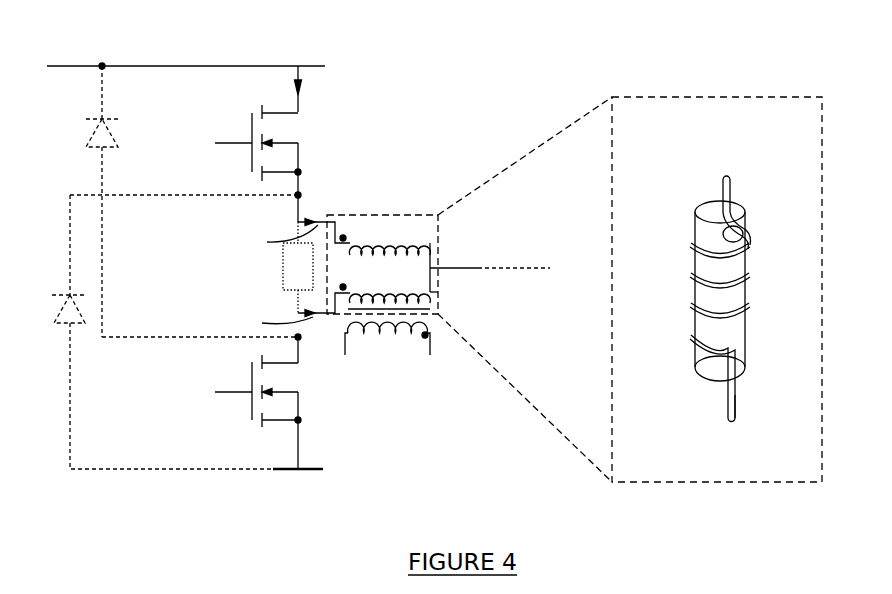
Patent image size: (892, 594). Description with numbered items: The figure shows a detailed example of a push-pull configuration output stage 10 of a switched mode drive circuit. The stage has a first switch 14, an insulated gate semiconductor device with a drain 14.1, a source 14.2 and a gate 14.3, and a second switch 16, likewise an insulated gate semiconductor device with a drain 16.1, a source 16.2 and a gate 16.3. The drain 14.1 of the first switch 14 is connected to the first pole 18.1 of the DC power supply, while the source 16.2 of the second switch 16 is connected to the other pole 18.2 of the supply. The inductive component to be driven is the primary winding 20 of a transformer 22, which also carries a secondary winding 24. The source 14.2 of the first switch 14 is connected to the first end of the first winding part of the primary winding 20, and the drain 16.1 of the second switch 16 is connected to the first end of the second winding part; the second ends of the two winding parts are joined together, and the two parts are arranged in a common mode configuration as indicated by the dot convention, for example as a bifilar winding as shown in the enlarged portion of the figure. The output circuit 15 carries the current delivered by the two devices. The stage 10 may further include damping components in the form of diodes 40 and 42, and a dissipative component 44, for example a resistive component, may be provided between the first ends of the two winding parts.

The output stage 10 is at (365, 107).
The first switch 14 is at (217, 162).
The drain of first switch 14.1 is at (278, 112).
The source of first switch 14.2 is at (281, 169).
The gate of first switch 14.3 is at (233, 137).
The output circuit 15 is at (297, 217).
The second switch 16 is at (232, 373).
The drain of second switch 16.1 is at (281, 363).
The source of second switch 16.2 is at (282, 423).
The gate of second switch 16.3 is at (237, 393).
The first pole of DC power supply 18.1 is at (302, 63).
The other pole of DC power supply 18.2 is at (298, 472).
The primary winding 20 is at (485, 248).
The transformer 22 is at (468, 305).
The secondary winding 24 is at (405, 340).
The damping diode 40 is at (63, 323).
The damping diode 42 is at (97, 143).
The dissipative component 44 is at (281, 267).